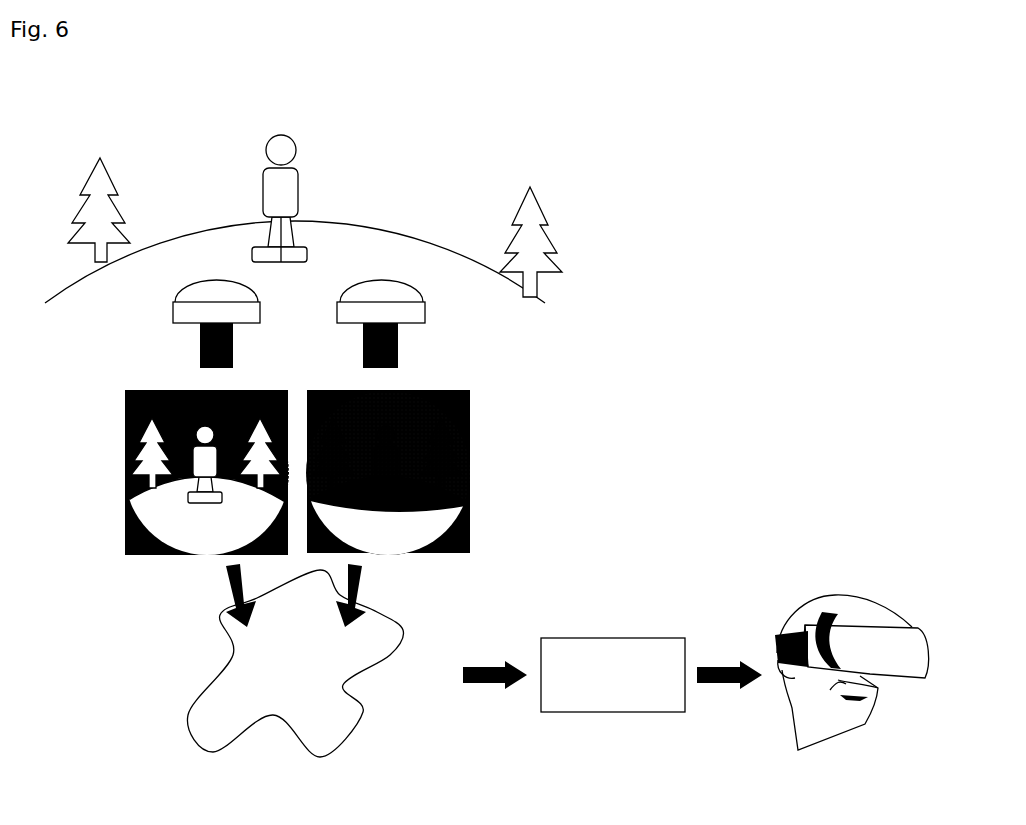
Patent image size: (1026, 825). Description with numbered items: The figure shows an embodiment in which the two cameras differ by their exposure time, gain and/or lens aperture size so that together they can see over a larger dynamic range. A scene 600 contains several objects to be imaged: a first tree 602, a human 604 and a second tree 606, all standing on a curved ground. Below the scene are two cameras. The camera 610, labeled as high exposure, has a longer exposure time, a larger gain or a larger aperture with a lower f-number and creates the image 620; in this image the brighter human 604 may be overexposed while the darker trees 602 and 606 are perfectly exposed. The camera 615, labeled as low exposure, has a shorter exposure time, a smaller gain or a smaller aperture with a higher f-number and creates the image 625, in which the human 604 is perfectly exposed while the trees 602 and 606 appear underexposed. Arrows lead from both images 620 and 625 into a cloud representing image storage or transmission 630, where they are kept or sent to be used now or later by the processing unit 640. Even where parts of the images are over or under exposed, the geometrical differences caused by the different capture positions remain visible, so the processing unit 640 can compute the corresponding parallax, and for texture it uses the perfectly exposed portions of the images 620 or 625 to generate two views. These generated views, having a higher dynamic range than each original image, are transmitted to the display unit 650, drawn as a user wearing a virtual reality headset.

The scene 600 is at (295, 196).
The tree 602 is at (110, 210).
The human 604 is at (300, 198).
The tree 606 is at (531, 222).
The camera 610 is at (218, 324).
The camera 615 is at (382, 324).
The image 620 is at (207, 475).
The image 625 is at (388, 475).
The image storage or transmission 630 is at (296, 660).
The processing unit 640 is at (612, 675).
The display unit 650 is at (852, 672).